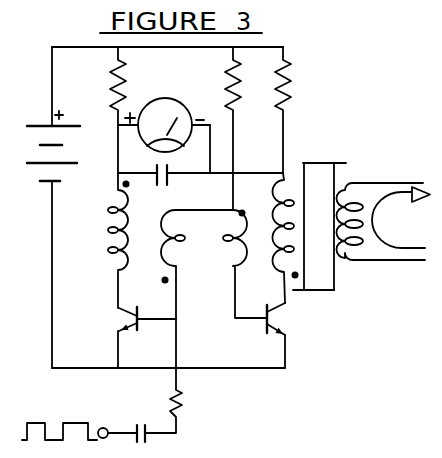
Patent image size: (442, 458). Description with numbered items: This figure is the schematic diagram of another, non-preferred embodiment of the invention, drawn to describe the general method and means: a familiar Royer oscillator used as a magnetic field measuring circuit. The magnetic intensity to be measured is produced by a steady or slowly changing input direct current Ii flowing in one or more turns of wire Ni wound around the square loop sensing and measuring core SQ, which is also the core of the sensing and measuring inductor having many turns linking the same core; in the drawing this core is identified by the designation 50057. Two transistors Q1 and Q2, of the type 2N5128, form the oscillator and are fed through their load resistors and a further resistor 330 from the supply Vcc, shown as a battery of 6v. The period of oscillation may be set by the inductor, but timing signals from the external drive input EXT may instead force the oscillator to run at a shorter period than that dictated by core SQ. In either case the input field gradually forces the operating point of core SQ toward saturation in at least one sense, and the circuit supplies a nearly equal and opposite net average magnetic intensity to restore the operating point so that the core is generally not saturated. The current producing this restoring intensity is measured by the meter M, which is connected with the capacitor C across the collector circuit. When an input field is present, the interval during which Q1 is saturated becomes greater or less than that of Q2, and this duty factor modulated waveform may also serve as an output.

The 330 ohm resistor 330 is at (207, 128).
The meter M is at (164, 124).
The capacitor C is at (200, 170).
The transistor Q1 is at (129, 334).
The transistor Q2 is at (291, 335).
The 2N5128 transistors 2N5128 is at (199, 335).
The square loop sensing and measuring core SQ is at (319, 213).
The 50057 1/2 F core 50057 is at (355, 256).
The input winding Ni is at (381, 240).
The input direct current Ii is at (389, 208).
The supply voltage Vcc battery Vcc is at (47, 207).
The 6 volt supply 6v is at (33, 202).
The external drive input EXT is at (102, 405).